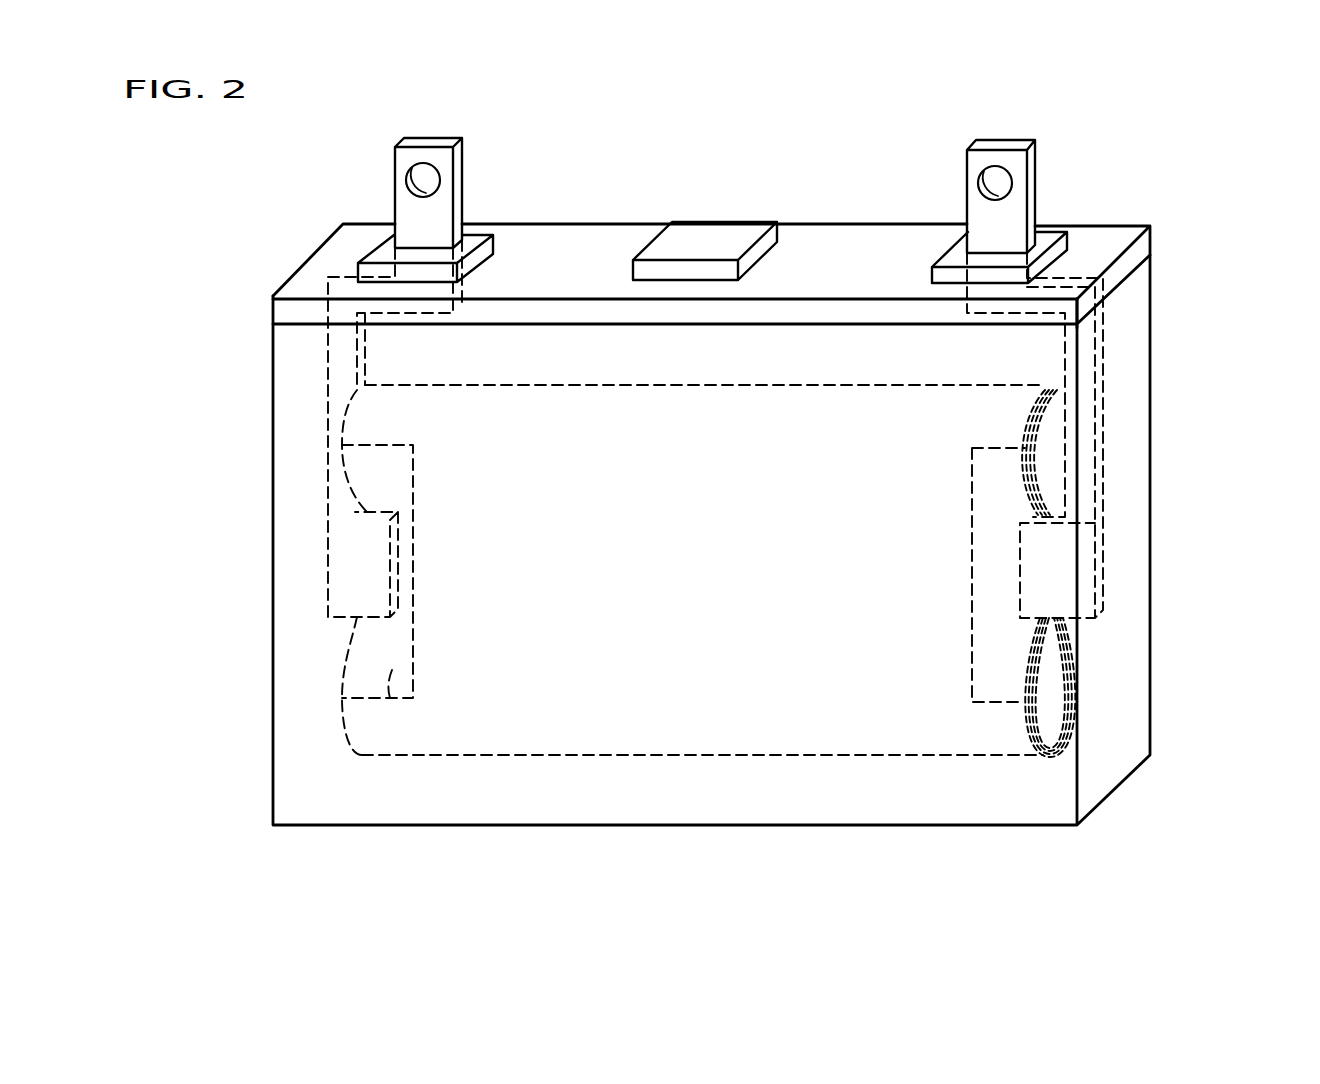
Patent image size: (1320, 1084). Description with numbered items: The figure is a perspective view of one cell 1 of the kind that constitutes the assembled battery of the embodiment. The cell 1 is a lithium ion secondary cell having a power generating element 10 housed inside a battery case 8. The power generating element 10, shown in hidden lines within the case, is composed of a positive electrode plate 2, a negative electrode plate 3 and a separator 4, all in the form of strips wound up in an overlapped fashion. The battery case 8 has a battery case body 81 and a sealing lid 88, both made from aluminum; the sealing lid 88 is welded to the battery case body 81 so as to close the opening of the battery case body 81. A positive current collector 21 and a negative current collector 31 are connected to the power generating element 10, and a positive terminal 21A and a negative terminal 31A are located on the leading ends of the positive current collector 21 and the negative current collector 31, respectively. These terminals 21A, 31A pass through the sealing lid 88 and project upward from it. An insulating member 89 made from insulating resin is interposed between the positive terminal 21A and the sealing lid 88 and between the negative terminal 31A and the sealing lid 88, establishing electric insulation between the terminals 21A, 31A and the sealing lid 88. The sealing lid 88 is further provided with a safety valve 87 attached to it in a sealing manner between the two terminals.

The cell 1 is at (1181, 179).
The positive electrode plate 2 is at (392, 698).
The negative electrode plate 3 is at (990, 635).
The separator 4 is at (700, 645).
The battery case 8 is at (1222, 237).
The power generating element 10 is at (910, 882).
The positive current collector 21 is at (340, 500).
The positive terminal 21A is at (402, 163).
The negative current collector 31 is at (1087, 483).
The negative terminal 31A is at (1015, 161).
The battery case body 81 is at (1138, 335).
The safety valve 87 is at (713, 228).
The sealing lid 88 is at (1143, 247).
The insulating member 89 is at (385, 252).